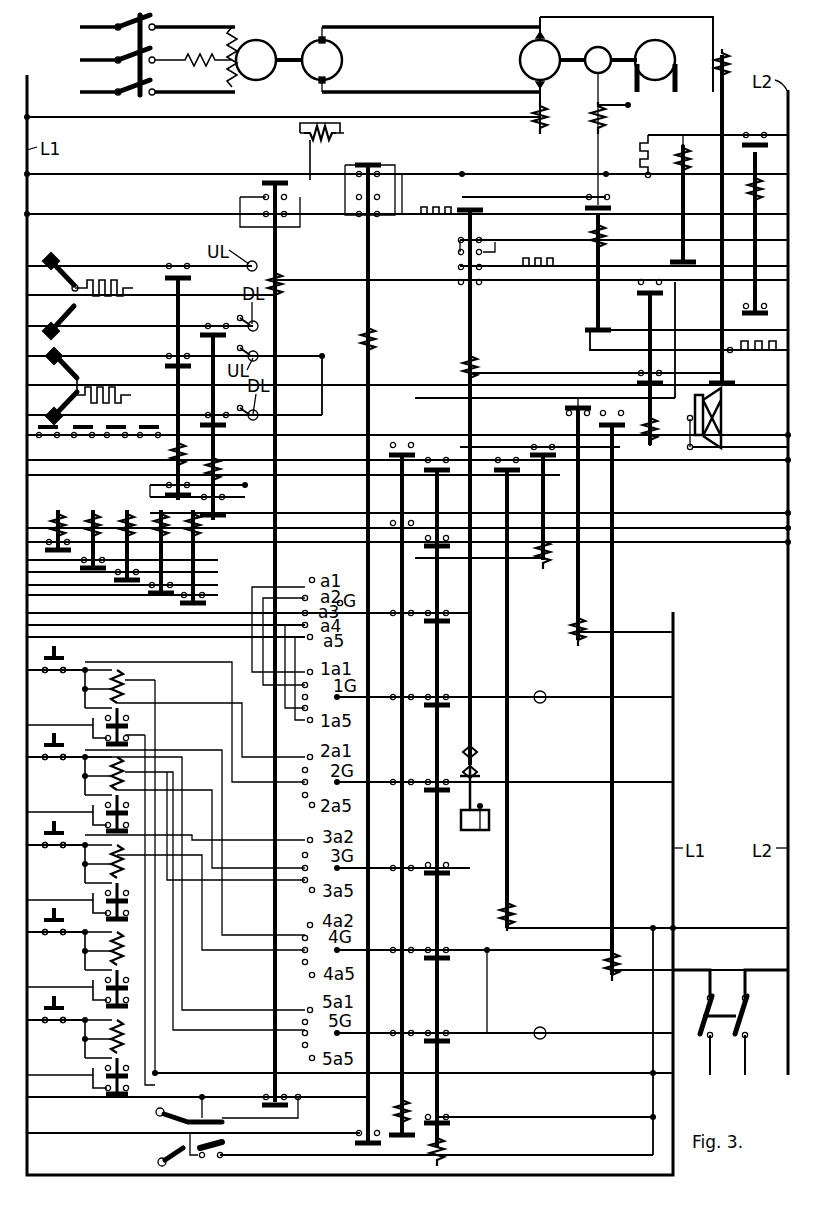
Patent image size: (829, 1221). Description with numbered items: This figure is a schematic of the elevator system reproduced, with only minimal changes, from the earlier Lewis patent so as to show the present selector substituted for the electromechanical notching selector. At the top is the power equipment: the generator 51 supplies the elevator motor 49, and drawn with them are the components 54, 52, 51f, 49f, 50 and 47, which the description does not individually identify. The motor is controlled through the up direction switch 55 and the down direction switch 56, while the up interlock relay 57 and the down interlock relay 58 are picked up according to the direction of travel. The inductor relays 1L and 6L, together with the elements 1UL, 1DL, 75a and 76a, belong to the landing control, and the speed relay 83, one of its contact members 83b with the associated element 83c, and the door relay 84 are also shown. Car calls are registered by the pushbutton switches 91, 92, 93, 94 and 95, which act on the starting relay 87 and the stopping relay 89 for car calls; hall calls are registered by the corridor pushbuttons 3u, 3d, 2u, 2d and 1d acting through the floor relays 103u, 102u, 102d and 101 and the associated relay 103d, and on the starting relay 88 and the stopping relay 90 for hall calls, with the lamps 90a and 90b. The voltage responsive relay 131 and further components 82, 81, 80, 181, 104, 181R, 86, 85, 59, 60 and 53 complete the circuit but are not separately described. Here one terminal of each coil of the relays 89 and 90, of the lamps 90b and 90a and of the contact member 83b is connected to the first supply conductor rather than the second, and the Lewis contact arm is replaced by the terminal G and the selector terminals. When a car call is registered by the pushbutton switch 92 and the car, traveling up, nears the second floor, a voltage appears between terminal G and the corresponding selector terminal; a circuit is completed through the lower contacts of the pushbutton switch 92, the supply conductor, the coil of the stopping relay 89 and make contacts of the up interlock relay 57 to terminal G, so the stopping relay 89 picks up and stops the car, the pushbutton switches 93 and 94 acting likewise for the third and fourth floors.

The three-pole switch 54 is at (115, 52).
The motor 52 is at (266, 46).
The generator 51 is at (342, 60).
The generator field winding 51f is at (336, 137).
The elevator motor 49 is at (518, 60).
The hoist motor field 49f is at (538, 128).
The brake 50 is at (601, 50).
The drum 47 is at (674, 54).
The voltage responsive relay 131 is at (729, 60).
The resistor 82 is at (434, 200).
The relay 81 is at (683, 197).
The relay 80 is at (751, 194).
The relay 181 is at (608, 236).
The resistor 104 is at (540, 264).
The speed relay 83 is at (476, 362).
The contact members 83b is at (472, 762).
The heater 83c is at (475, 830).
The resistor 181R is at (762, 360).
The door relay 84 is at (648, 440).
The alarm 86 is at (688, 432).
The starting relay, car calls 87 is at (550, 558).
The stopping relay, car calls 89 is at (570, 632).
The stopping relay, hall calls 90 is at (602, 965).
The lamp 90a is at (542, 1030).
The lamp 90b is at (542, 692).
The starting relay, hall calls 88 is at (520, 694).
The up interlock relay 57 is at (406, 1106).
The down interlock relay 58 is at (441, 1140).
The up direction switch 55 is at (276, 376).
The down direction switch 56 is at (368, 376).
The relay 75a is at (174, 262).
The relay 76a is at (216, 328).
The upper limit switch 1UL is at (54, 262).
The lower limit switch 1DL is at (54, 326).
The inductor relay 1L is at (128, 288).
The inductor relay 6L is at (125, 385).
The contacts 85 is at (103, 438).
The pushbutton switch, car calls 91 is at (56, 520).
The pushbutton switch, car calls 92 is at (92, 520).
The pushbutton switch, car calls 93 is at (125, 518).
The pushbutton switch, car calls 94 is at (155, 520).
The pushbutton switch, car calls 95 is at (202, 524).
The floor relay 103u is at (123, 676).
The floor relay 103d is at (114, 790).
The floor relay 102u is at (114, 877).
The floor relay 102d is at (114, 967).
The floor relay 101 is at (114, 1053).
The corridor pushbutton 3u is at (55, 676).
The corridor pushbutton 3d is at (55, 763).
The corridor pushbutton 2u is at (55, 851).
The corridor pushbutton 2d is at (55, 938).
The corridor pushbutton 1d is at (55, 1026).
The switch 59 is at (158, 1116).
The switch 60 is at (164, 1154).
The line switch 53 is at (710, 1010).